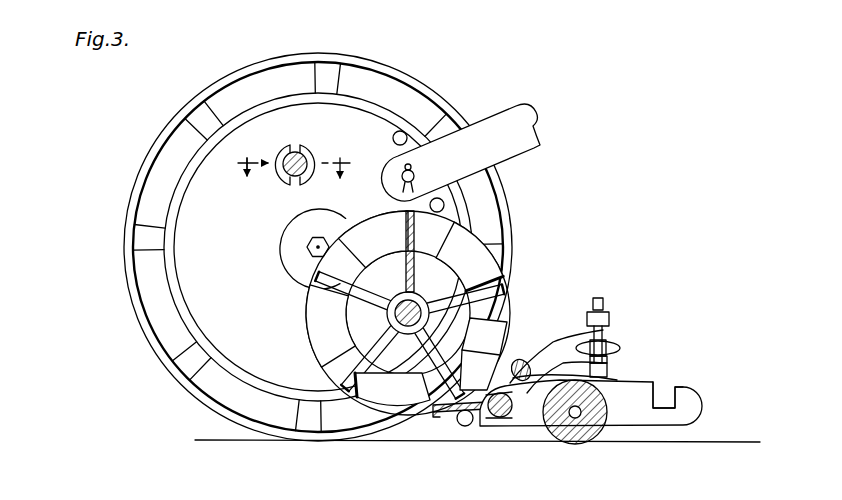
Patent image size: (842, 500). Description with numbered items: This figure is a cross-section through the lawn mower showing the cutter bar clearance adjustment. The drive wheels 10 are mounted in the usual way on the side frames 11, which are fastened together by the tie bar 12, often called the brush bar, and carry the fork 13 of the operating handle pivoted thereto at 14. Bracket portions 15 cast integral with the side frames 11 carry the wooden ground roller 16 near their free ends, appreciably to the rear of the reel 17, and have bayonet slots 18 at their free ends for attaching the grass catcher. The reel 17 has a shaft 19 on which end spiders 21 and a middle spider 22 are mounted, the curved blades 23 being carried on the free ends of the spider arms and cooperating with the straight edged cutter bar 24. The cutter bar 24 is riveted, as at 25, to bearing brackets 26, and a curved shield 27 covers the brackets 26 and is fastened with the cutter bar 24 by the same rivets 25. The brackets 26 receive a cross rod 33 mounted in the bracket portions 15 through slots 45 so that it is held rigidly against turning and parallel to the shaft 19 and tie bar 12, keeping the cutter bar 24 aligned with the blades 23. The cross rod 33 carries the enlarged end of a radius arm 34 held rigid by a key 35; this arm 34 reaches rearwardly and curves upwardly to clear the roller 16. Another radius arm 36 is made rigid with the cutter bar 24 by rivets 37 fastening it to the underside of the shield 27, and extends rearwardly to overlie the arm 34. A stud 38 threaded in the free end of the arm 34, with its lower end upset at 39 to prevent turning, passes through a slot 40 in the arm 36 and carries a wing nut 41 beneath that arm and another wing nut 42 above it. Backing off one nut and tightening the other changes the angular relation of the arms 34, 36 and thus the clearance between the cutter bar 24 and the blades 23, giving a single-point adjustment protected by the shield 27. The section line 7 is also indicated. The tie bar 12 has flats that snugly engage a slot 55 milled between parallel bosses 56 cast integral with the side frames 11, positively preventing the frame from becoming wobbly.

The section line 7- 7 is at (295, 172).
The drive wheels 10 is at (123, 207).
The side frames 11 is at (188, 282).
The tie bar 12 is at (298, 178).
The fork of the operating handle 13 is at (505, 115).
The pivot of the fork 14 is at (414, 177).
The bracket portions 15 is at (638, 420).
The ground roller 16 is at (587, 430).
The reel 17 is at (480, 258).
The bayonet slots 18 is at (700, 402).
The shaft 19 is at (395, 314).
The end spiders 21 is at (392, 389).
The middle spider 22 is at (345, 362).
The curved blades 23 is at (379, 230).
The cutter bar 24 is at (433, 413).
The rivets 25 is at (462, 414).
The bearing brackets 26 is at (463, 392).
The shield 27 is at (483, 354).
The cross rod 33 is at (503, 420).
The radius arm 34 is at (532, 427).
The key 35 is at (515, 425).
The radius arm 36 is at (550, 343).
The rivets 37 is at (518, 358).
The stud 38 is at (603, 358).
The upset lower end of stud 39 is at (610, 377).
The slot 40 is at (608, 327).
The wing nut 41 is at (612, 345).
The wing nut 42 is at (608, 315).
The slots 45 is at (498, 430).
The slot 55 is at (287, 150).
The bosses 56 is at (275, 173).